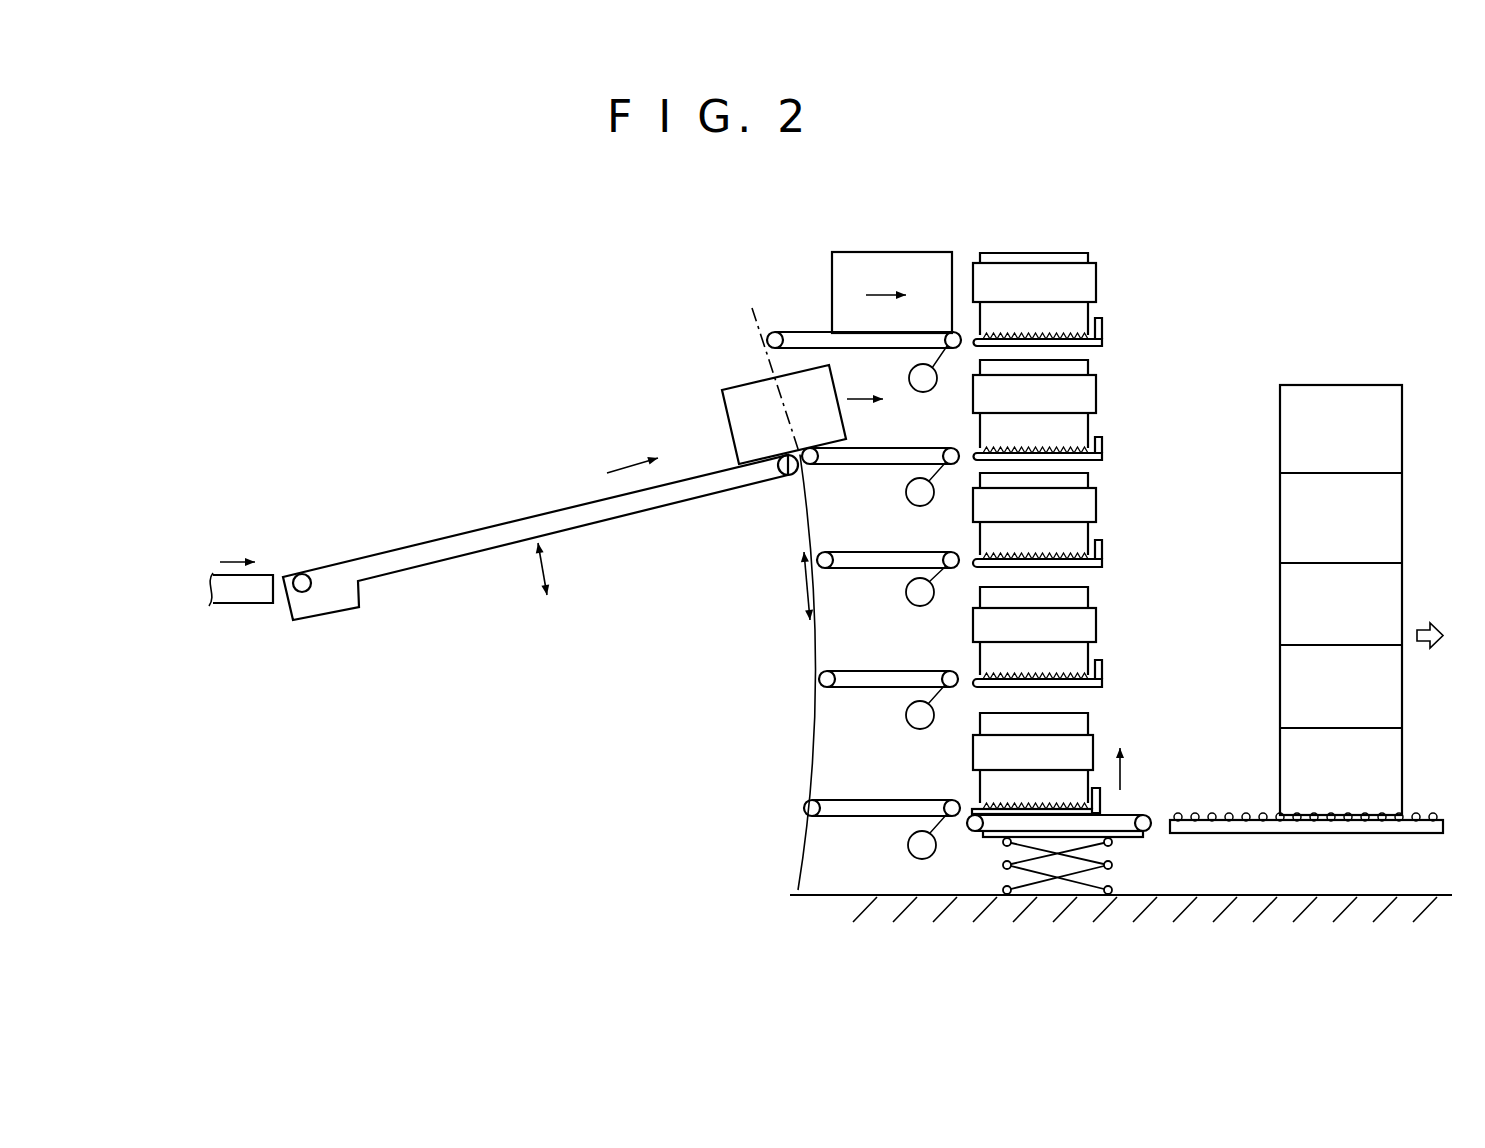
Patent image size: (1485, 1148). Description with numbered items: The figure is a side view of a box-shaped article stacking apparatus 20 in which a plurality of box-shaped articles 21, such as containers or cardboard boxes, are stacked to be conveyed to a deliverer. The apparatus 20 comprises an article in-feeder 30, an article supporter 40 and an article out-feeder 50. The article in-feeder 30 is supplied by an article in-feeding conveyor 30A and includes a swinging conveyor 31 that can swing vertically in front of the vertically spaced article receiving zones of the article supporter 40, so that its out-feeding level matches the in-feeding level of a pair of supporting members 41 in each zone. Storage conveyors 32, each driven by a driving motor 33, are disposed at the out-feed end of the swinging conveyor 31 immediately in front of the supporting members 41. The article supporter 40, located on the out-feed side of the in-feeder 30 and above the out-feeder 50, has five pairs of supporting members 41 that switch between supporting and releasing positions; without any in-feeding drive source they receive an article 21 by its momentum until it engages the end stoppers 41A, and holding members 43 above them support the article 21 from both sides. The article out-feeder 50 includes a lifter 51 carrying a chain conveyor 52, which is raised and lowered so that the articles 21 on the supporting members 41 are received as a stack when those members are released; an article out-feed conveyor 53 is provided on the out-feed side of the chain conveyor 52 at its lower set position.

The box-shaped article stacking apparatus 20 is at (945, 218).
The box-shaped article 21 is at (850, 252).
The article in-feeder 30 is at (570, 492).
The article in-feeding conveyor 30A is at (250, 598).
The swinging conveyor 31 is at (615, 512).
The storage conveyor 32 is at (812, 333).
The driving motor 33 is at (923, 393).
The article supporter 40 is at (1118, 413).
The supporting member 41 is at (1075, 345).
The end stopper 41A is at (1103, 323).
The holding member 43 is at (1098, 270).
The article out-feeder 50 is at (1168, 795).
The lifter 51 is at (1115, 862).
The chain conveyor 52 is at (1128, 815).
The article out-feed conveyor 53 is at (1413, 815).